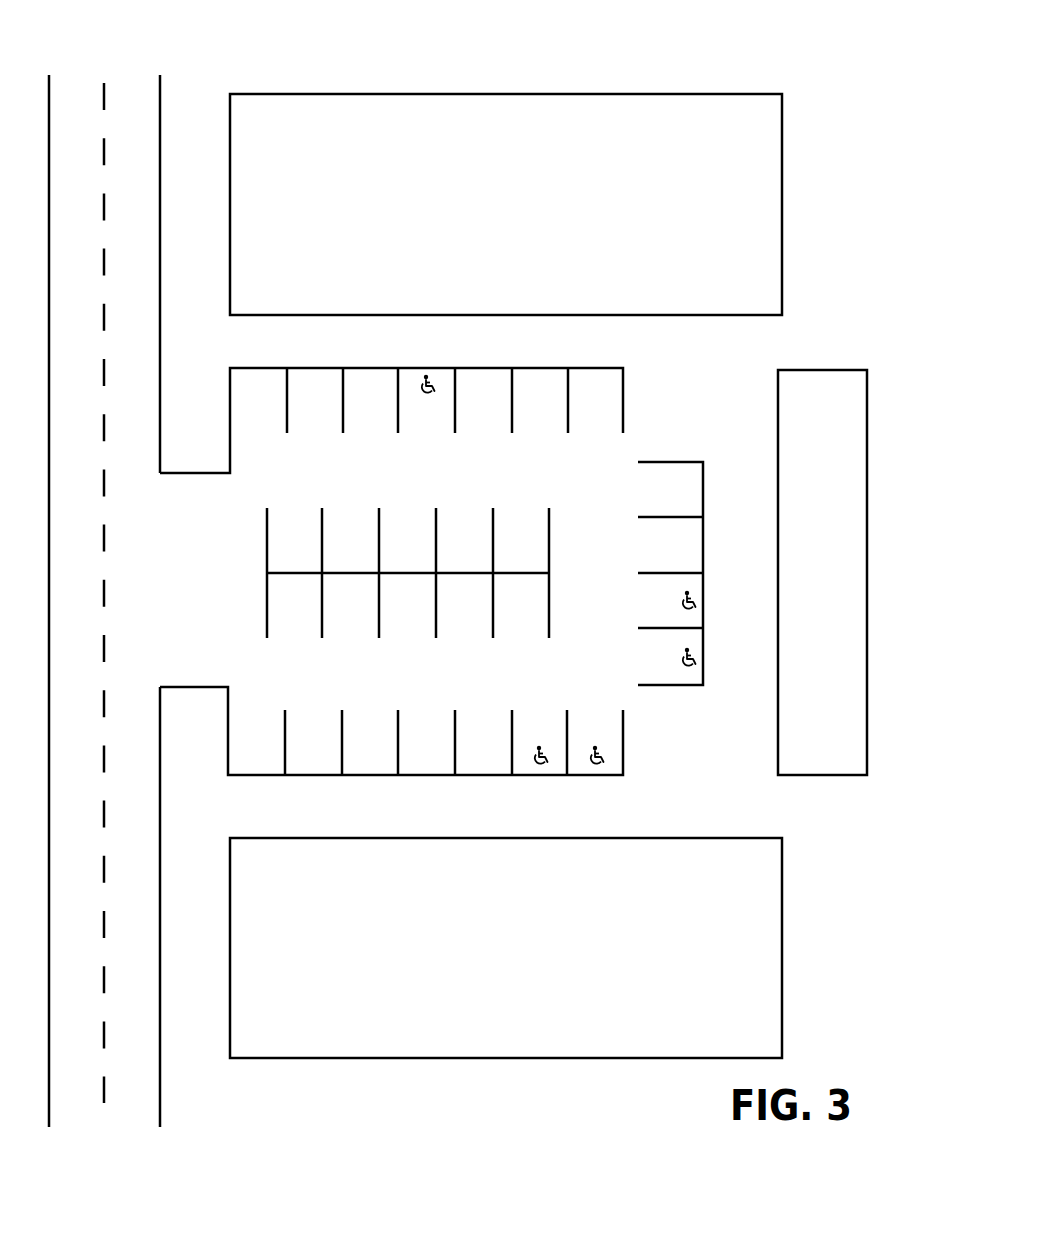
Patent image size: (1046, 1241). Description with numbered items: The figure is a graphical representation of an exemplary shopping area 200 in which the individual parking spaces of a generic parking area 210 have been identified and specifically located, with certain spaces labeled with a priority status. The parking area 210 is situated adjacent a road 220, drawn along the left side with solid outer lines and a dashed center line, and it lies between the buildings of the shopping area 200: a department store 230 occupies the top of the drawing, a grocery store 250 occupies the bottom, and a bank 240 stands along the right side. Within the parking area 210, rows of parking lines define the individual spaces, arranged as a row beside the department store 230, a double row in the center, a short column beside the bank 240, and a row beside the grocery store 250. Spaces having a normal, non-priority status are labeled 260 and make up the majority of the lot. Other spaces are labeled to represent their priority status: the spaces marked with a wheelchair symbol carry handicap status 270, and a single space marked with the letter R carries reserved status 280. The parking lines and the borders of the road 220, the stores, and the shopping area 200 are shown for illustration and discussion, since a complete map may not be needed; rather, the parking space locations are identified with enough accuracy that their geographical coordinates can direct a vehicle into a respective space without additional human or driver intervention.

The shopping area 200 is at (677, 50).
The parking area 210 is at (374, 687).
The road 220 is at (121, 286).
The department store 230 is at (506, 204).
The bank 240 is at (822, 572).
The grocery store 250 is at (506, 948).
The parking spaces having normal status 260 is at (470, 571).
The handicap status parking spaces 270 is at (552, 569).
The reserved status parking space 280 is at (522, 542).